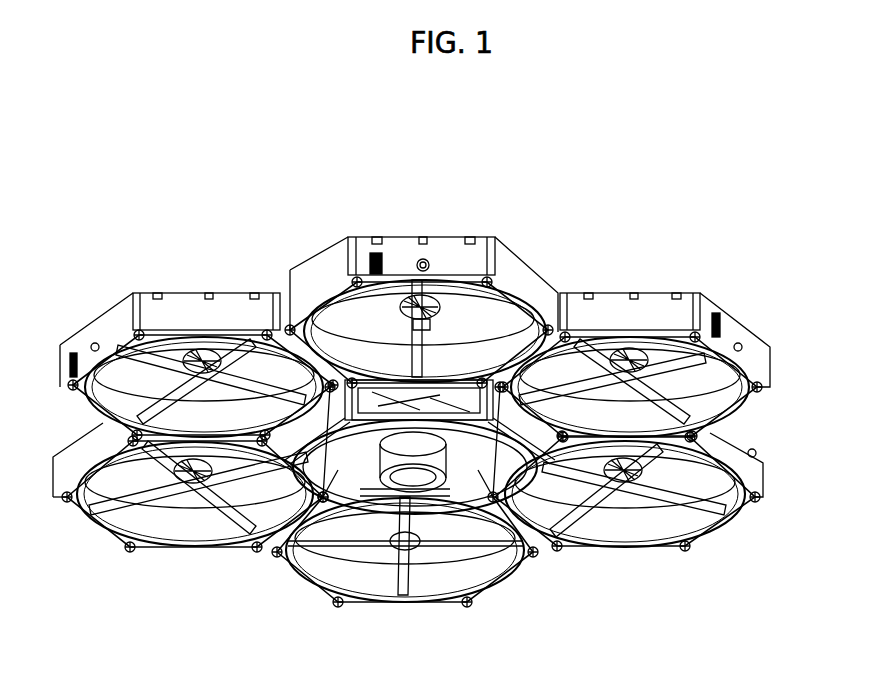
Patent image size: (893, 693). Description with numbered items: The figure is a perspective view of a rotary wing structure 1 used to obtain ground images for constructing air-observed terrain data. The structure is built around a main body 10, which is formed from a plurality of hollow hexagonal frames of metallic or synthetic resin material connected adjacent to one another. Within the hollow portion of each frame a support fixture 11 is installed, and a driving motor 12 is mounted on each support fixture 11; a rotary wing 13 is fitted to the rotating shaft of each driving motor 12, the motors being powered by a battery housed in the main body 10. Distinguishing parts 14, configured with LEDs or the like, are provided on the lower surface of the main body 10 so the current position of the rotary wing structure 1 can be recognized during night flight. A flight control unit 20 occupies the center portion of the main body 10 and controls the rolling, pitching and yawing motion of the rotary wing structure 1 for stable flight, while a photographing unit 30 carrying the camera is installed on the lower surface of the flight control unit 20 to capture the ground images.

The rotary wing structure 1 is at (633, 158).
The main body 10 is at (686, 291).
The support fixture 11 is at (724, 379).
The driving motor 12 is at (717, 330).
The rotary wing 13 is at (619, 342).
The distinguishing part 14 is at (345, 250).
The flight control unit 20 is at (542, 490).
The photographing unit 30 is at (375, 468).